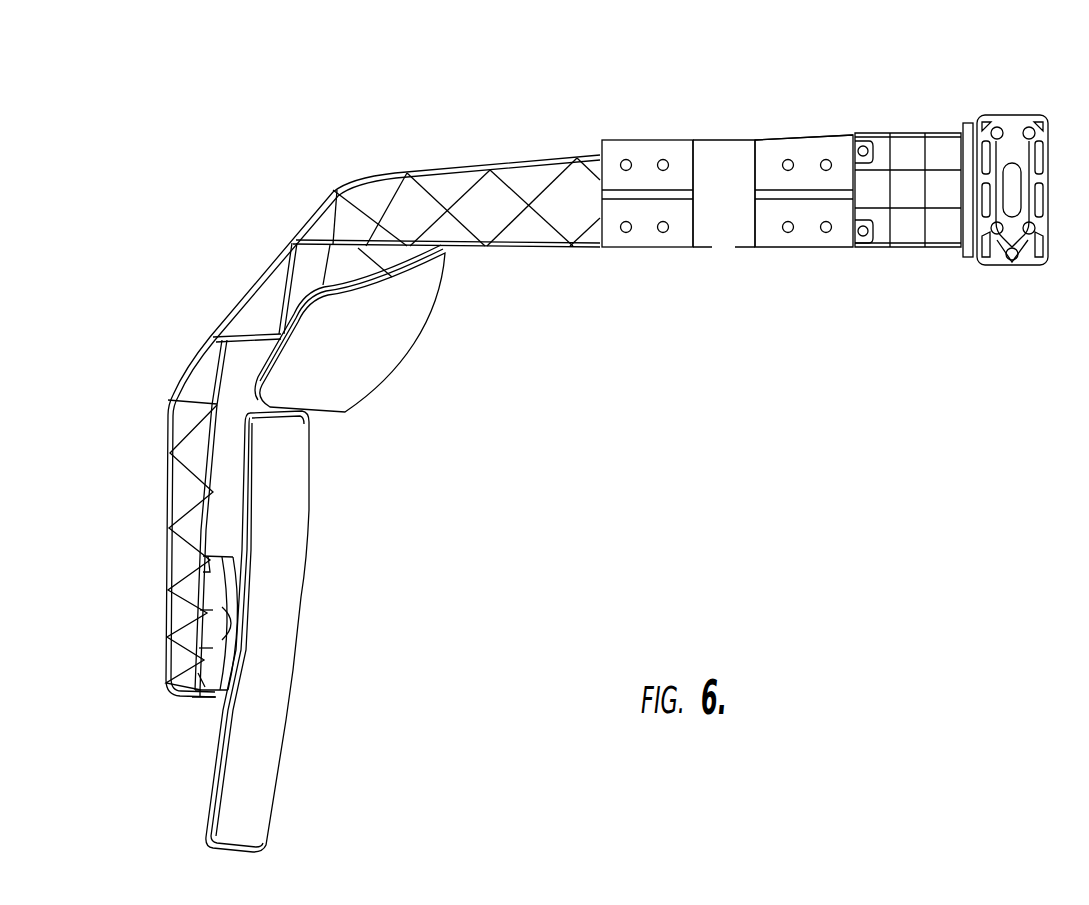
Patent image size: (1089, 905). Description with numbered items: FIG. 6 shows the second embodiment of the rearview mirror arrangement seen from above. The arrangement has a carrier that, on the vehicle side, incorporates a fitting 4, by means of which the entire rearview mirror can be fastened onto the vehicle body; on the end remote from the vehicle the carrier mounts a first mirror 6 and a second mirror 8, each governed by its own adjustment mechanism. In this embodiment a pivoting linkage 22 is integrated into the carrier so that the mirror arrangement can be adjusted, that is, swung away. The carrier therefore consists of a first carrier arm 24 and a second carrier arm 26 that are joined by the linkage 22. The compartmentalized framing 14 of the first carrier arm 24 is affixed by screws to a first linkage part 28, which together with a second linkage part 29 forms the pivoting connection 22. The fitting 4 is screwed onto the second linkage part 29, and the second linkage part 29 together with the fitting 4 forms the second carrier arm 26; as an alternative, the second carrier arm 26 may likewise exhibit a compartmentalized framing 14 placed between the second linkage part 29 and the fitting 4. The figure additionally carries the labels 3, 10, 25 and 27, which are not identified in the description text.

The mounting bracket 3 is at (1028, 265).
The fitting 4 is at (948, 228).
The first mirror 6 is at (290, 600).
The second mirror 8 is at (393, 341).
The pivot bracket 10 is at (199, 680).
The compartmentalized framing 14 is at (390, 175).
The pivoting linkage 22 is at (727, 256).
The first carrier arm 24 is at (238, 272).
The holes 25 is at (663, 159).
The second carrier arm 26 is at (786, 130).
The holes 27 is at (826, 159).
The first linkage part 28 is at (660, 248).
The second linkage part 29 is at (820, 248).